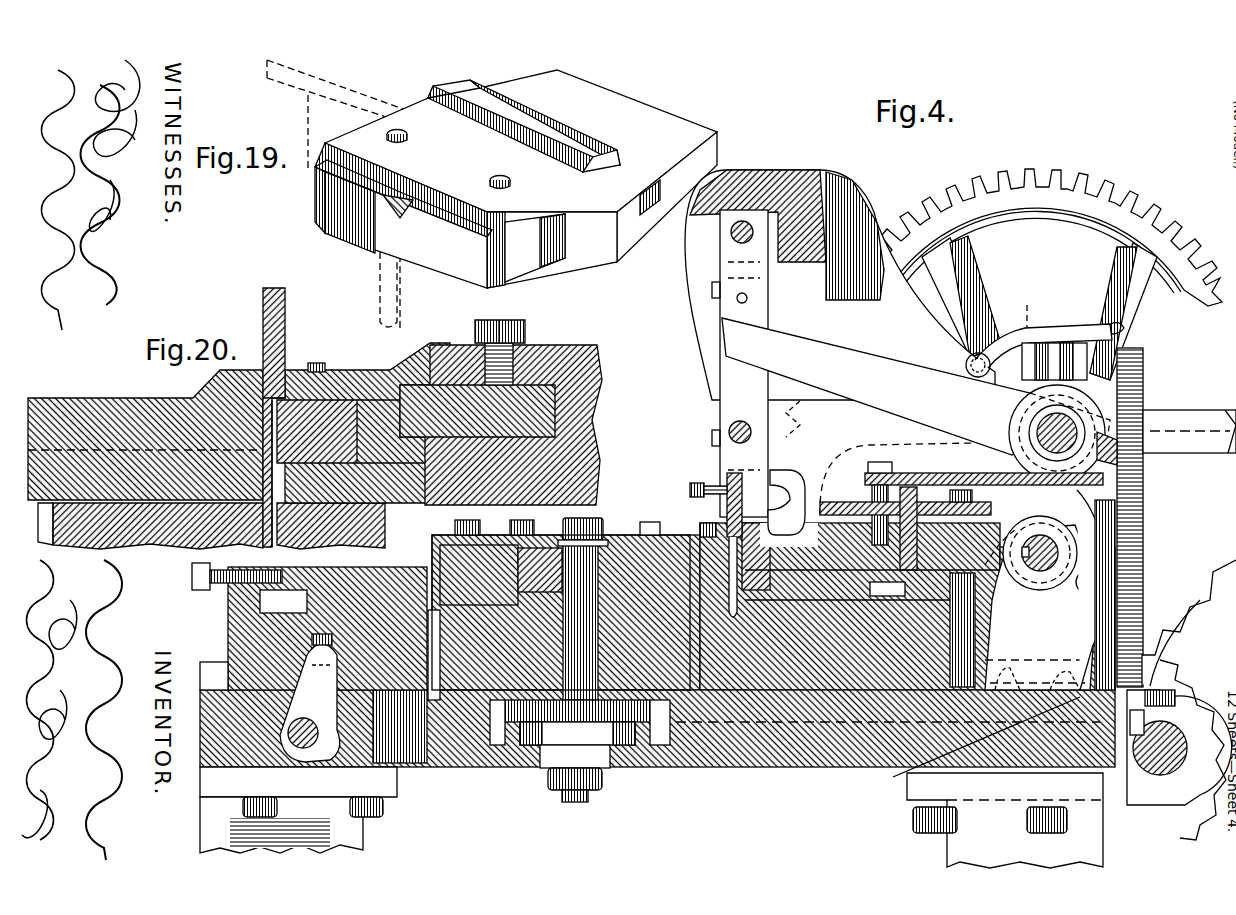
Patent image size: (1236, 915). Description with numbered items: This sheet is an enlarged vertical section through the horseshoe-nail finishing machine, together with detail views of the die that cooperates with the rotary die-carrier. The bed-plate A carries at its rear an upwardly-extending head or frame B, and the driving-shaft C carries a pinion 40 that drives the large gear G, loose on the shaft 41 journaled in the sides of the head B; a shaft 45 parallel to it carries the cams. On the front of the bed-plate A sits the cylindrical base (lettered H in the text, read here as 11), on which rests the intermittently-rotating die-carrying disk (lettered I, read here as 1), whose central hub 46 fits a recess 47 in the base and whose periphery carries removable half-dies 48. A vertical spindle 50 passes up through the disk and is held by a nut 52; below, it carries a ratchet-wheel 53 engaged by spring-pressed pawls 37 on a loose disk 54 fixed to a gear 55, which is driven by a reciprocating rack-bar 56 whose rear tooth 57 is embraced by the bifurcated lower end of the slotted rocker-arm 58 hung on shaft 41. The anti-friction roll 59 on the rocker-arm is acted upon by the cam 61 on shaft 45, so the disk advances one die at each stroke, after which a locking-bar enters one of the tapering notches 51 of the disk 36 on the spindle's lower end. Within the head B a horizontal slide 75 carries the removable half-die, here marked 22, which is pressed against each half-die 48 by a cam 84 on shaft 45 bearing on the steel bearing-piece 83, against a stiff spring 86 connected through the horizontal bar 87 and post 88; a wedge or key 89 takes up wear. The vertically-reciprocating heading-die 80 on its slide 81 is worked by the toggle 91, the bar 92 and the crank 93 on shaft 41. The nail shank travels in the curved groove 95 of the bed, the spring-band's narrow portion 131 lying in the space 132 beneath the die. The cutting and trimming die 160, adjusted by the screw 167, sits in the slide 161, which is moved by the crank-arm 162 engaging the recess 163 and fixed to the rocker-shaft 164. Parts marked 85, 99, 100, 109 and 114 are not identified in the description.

In FIG. 4, the bed 1 is at (620, 540).
In FIG. 4, the carriage 11 is at (500, 690).
In FIG. 19, the tool 22 is at (403, 224).
In FIG. 20, the tool 22 is at (317, 431).
In FIG. 4, the tool 22 is at (735, 552).
In FIG. 4, the disk 36 is at (548, 795).
In FIG. 4, the spring-pressed pawls 37 is at (668, 750).
In FIG. 4, the pinion 40 is at (1180, 835).
In FIG. 4, the shaft 41 is at (1041, 320).
In FIG. 4, the shaft 45 is at (1030, 565).
In FIG. 4, the central hub 46 is at (540, 570).
In FIG. 20, the recess 47 is at (110, 415).
In FIG. 4, the recess 47 is at (655, 514).
In FIG. 4, the removable half-dies 48 is at (455, 528).
In FIG. 4, the vertical spindle 50 is at (580, 617).
In FIG. 4, the tapering notches 51 is at (580, 760).
In FIG. 4, the nut 52 is at (585, 518).
In FIG. 4, the ratchet-wheel 53 is at (605, 748).
In FIG. 4, the disk 54 is at (548, 740).
In FIG. 4, the gear 55 is at (660, 770).
In FIG. 4, the reciprocating rack-bar 56 is at (605, 725).
In FIG. 4, the upwardly-projecting tooth 57 is at (893, 777).
In FIG. 4, the depending slotted rocker-arm 58 is at (1040, 607).
In FIG. 4, the anti-friction roll 59 is at (1092, 580).
In FIG. 4, the cam 61 is at (1108, 530).
In FIG. 20, the horizontal reciprocating slide 75 is at (568, 358).
In FIG. 4, the horizontal reciprocating slide 75 is at (835, 505).
In FIG. 19, the vertically-reciprocating heading-die 80 is at (308, 113).
In FIG. 20, the vertically-reciprocating heading-die 80 is at (285, 328).
In FIG. 4, the vertically-reciprocating heading-die 80 is at (727, 478).
In FIG. 4, the slide 81 is at (789, 508).
In FIG. 4, the steel bearing-piece 83 is at (1000, 535).
In FIG. 4, the cam 84 is at (1040, 553).
In FIG. 4, the stop 85 is at (1107, 448).
In FIG. 4, the stiff spring 86 is at (1150, 630).
In FIG. 4, the horizontal bar 87 is at (955, 500).
In FIG. 4, the post 88 is at (870, 490).
In FIG. 4, the wedge or key 89 is at (905, 526).
In FIG. 4, the toggle 91 is at (720, 384).
In FIG. 19, the rod or bar 92 is at (516, 179).
In FIG. 20, the rod or bar 92 is at (372, 378).
In FIG. 4, the rod or bar 92 is at (916, 399).
In FIG. 4, the crank 93 is at (1090, 425).
In FIG. 4, the curved groove 95 is at (740, 585).
In FIG. 4, the key 99 is at (885, 587).
In FIG. 4, the slide 100 is at (479, 575).
In FIG. 4, the pawl 109 is at (1075, 338).
In FIG. 4, the spring 114 is at (1143, 474).
In FIG. 20, the narrow portion 131 is at (290, 510).
In FIG. 4, the narrow portion 131 is at (745, 560).
In FIG. 20, the space 132 is at (330, 508).
In FIG. 4, the space 132 is at (745, 548).
In FIG. 4, the cutting and trimming die 160 is at (282, 603).
In FIG. 4, the horizontal slide 161 is at (228, 620).
In FIG. 4, the crank-arm 162 is at (310, 703).
In FIG. 4, the recess 163 is at (335, 645).
In FIG. 4, the transverse rocker-shaft 164 is at (310, 745).
In FIG. 4, the screw 167 is at (192, 575).
In FIG. 4, the bed-plate A is at (845, 770).
In FIG. 4, the head or frame B is at (840, 285).
In FIG. 4, the driving-shaft C is at (1150, 770).
In FIG. 4, the large gear G is at (1055, 175).